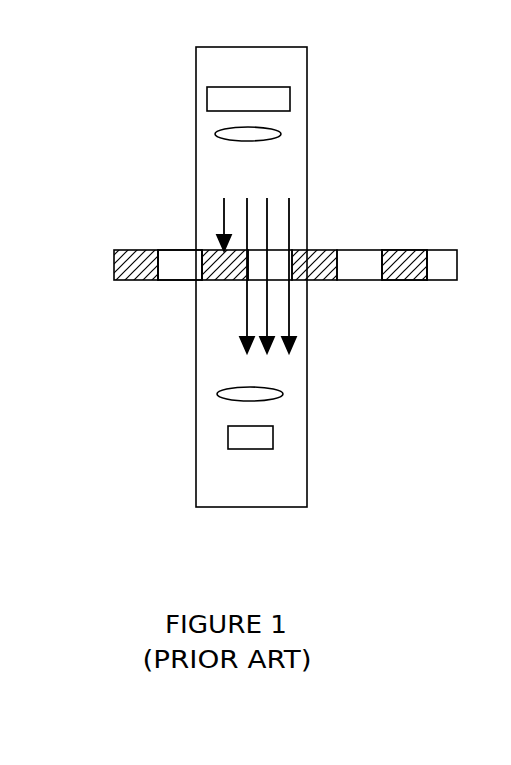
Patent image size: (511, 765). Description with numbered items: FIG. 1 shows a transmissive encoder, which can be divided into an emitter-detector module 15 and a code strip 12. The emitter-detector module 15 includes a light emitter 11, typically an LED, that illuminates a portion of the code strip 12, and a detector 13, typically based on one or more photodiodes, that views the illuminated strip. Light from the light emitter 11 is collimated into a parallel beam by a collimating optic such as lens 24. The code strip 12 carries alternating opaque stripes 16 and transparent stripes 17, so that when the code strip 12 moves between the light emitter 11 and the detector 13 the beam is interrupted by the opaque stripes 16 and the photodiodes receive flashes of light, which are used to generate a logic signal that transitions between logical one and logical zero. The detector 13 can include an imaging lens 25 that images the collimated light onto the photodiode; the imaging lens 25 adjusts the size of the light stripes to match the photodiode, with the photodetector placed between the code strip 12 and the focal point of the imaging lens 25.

The light emitter 11 is at (208, 110).
The code strip 12 is at (444, 280).
The detector 13 is at (248, 445).
The emitter-detector module 15 is at (305, 190).
The opaque stripes 16 is at (385, 280).
The transparent stripes 17 is at (172, 281).
The lens 24 is at (281, 131).
The imaging lens 25 is at (282, 392).